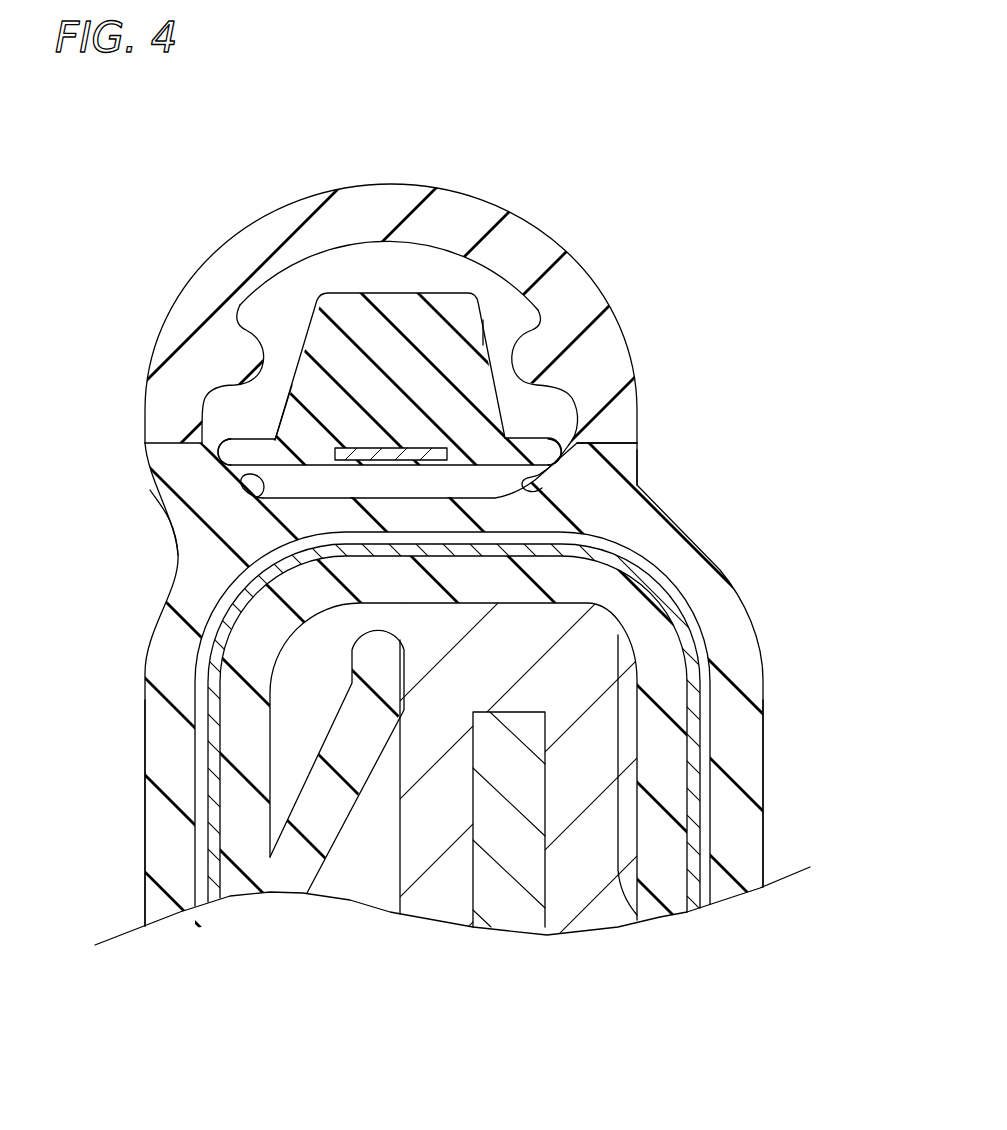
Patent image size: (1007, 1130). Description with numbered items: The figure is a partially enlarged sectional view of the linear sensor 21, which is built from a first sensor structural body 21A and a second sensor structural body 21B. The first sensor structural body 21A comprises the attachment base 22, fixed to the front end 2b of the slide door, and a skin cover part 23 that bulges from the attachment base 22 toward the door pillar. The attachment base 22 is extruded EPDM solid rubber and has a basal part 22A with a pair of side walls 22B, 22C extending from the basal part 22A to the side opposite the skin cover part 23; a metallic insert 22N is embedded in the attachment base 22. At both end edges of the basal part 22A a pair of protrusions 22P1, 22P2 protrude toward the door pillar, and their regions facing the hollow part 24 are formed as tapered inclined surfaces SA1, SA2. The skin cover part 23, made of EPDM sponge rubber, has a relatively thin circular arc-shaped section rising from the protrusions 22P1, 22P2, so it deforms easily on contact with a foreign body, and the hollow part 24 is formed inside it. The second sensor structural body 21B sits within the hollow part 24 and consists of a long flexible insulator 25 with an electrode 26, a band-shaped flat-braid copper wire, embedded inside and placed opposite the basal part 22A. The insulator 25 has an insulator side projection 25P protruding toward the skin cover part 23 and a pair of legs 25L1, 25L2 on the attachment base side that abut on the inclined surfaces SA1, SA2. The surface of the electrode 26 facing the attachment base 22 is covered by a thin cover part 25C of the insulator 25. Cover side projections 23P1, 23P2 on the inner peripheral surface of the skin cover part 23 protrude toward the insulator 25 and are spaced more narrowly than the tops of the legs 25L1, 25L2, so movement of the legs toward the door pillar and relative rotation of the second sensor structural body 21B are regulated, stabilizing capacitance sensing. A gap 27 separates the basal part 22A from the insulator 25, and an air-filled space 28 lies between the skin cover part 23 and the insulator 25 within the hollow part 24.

The linear sensor 21 is at (681, 150).
The first sensor structural body 21A is at (770, 377).
The second sensor structural body 21B is at (173, 172).
The attachment base 22 is at (697, 545).
The basal part 22A is at (337, 605).
The side wall 22B is at (763, 823).
The side wall 22C is at (143, 843).
The metallic insert 22N is at (700, 712).
The protrusion 22P1 is at (640, 458).
The protrusion 22P2 is at (245, 497).
The skin cover part 23 is at (640, 366).
The cover side projection 23P1 is at (577, 397).
The cover side projection 23P2 is at (218, 378).
The hollow part 24 is at (490, 312).
The insulator 25 is at (290, 378).
The cover part 25C is at (380, 462).
The leg 25L1 is at (560, 420).
The leg 25L2 is at (217, 440).
The insulator side projection 25P is at (485, 333).
The electrode 26 is at (273, 432).
The gap 27 is at (418, 488).
The space 28 is at (372, 270).
The inclined surface SA1 is at (640, 479).
The inclined surface SA2 is at (170, 518).
The front end 2b is at (398, 885).